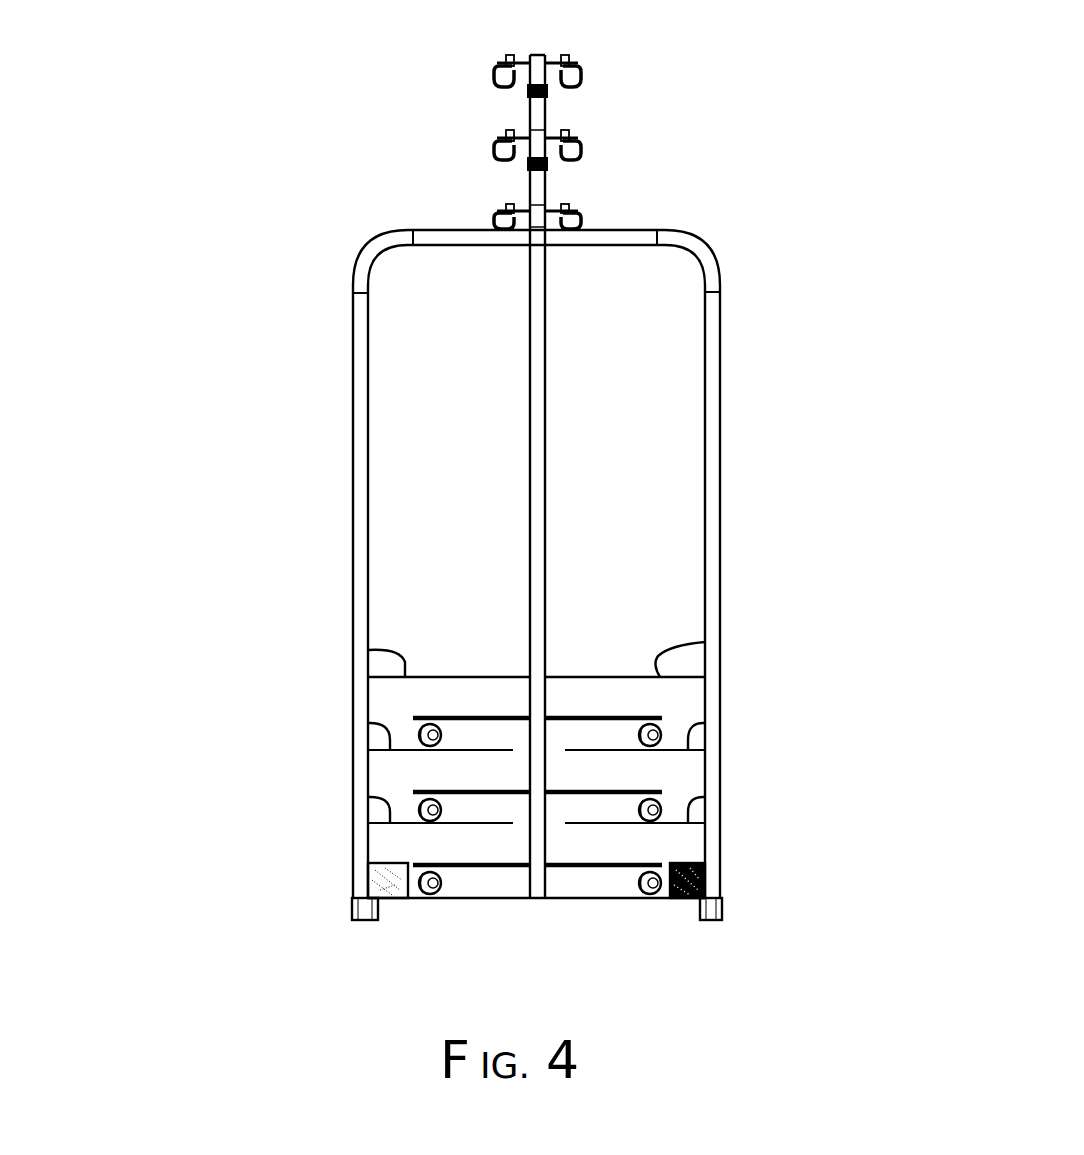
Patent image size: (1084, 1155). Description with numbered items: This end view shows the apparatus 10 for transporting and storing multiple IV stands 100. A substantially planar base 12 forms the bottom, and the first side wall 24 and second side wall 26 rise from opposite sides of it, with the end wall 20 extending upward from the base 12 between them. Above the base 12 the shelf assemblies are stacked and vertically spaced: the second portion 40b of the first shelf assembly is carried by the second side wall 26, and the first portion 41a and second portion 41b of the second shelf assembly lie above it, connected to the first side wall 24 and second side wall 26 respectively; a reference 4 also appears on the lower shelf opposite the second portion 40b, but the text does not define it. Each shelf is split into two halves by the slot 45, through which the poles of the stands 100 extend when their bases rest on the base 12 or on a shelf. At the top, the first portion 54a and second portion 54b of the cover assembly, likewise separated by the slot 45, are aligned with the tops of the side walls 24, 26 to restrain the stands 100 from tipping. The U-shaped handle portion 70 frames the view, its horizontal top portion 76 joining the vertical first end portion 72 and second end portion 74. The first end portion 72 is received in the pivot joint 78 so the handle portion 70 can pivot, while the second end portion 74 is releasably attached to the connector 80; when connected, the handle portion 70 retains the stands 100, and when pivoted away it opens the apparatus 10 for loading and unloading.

The apparatus 10 is at (185, 492).
The handle portion 70 is at (328, 274).
The top portion 76 is at (578, 246).
The second side wall 26 is at (353, 697).
The first side wall 24 is at (722, 692).
The end wall 20 is at (558, 690).
The slot 45 is at (517, 664).
The IV stand 100 is at (580, 68).
The first portion of cover assembly 54a is at (705, 640).
The second portion of cover assembly 54b is at (355, 643).
The first portion of second shelf assembly 41a is at (707, 720).
The second portion of second shelf assembly 41b is at (368, 735).
The second portion of first shelf assembly 40b is at (355, 792).
The shelf 4 is at (720, 790).
The base portion 12 is at (533, 900).
The first end portion 72 is at (355, 850).
The second end portion 74 is at (720, 838).
The pivot joint 78 is at (355, 893).
The connector 80 is at (722, 888).